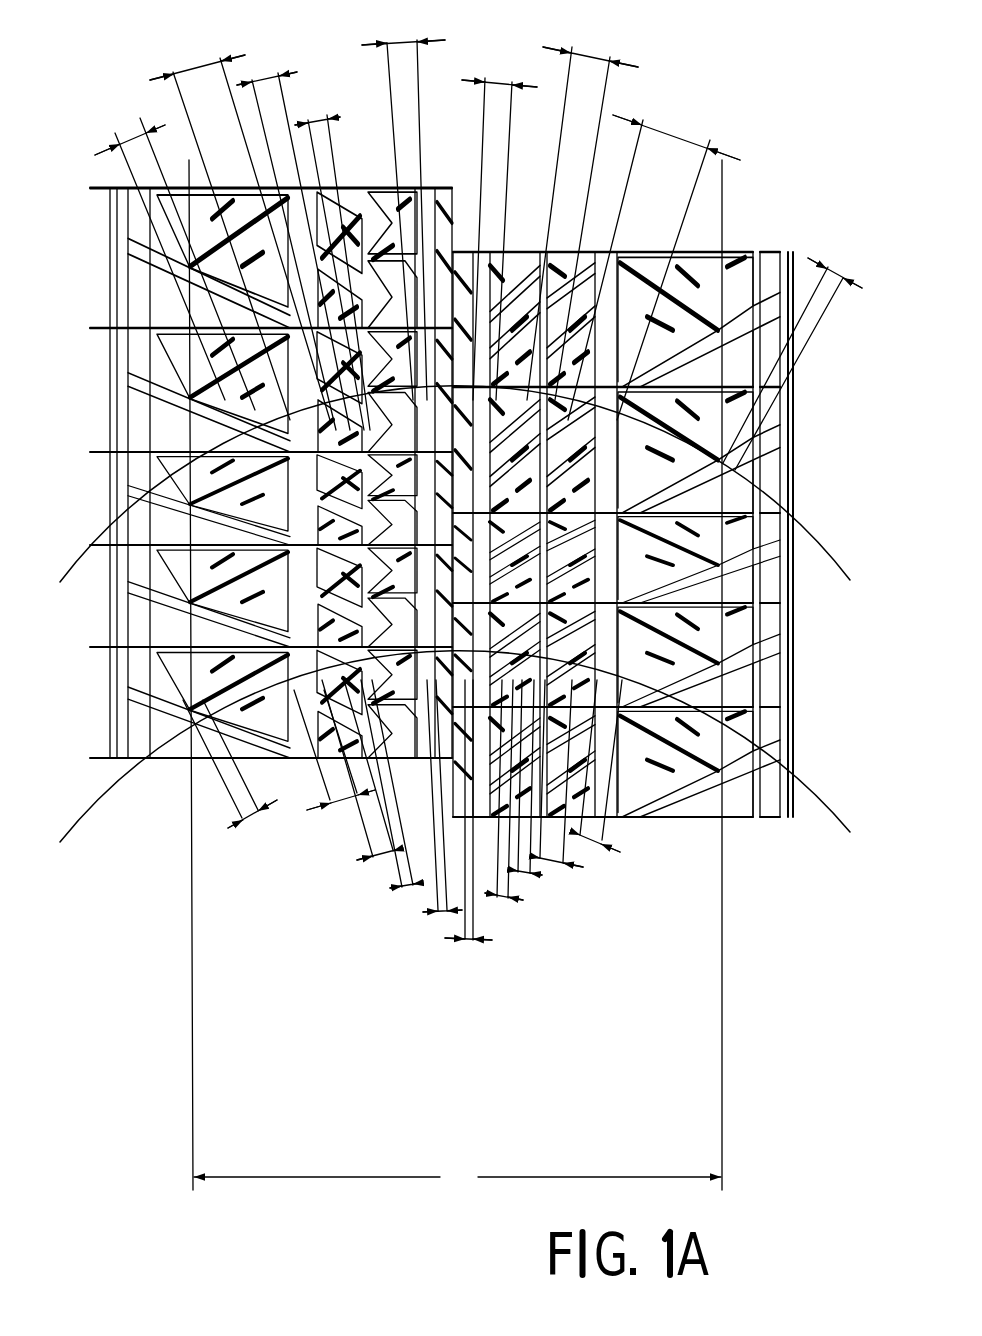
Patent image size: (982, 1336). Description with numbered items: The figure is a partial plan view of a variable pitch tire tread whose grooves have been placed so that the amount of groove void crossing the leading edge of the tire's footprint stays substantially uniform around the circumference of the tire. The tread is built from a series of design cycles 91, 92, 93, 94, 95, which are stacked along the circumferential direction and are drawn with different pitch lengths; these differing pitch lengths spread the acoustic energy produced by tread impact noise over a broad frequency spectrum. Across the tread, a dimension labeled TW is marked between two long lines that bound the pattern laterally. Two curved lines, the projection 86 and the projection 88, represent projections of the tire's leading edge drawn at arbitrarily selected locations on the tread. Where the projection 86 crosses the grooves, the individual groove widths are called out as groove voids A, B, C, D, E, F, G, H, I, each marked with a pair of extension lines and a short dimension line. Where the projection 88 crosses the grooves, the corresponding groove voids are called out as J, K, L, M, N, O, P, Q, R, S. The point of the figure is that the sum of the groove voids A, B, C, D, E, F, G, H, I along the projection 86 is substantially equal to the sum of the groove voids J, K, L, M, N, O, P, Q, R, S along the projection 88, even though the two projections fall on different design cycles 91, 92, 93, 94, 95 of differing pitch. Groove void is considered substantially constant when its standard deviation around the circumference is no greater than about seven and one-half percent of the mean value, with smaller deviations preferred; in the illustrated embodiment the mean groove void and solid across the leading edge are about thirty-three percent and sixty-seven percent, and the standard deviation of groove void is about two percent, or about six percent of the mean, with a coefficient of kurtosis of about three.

The groove void A is at (128, 133).
The groove void B is at (203, 62).
The groove void C is at (262, 78).
The groove void D is at (312, 115).
The groove void E is at (400, 42).
The groove void F is at (497, 80).
The groove void G is at (590, 50).
The groove void H is at (680, 133).
The groove void I is at (845, 270).
The groove void J is at (245, 820).
The groove void K is at (343, 800).
The groove void L is at (380, 855).
The groove void M is at (403, 886).
The groove void N is at (432, 912).
The groove void O is at (462, 940).
The groove void P is at (500, 897).
The groove void Q is at (525, 873).
The groove void R is at (555, 860).
The groove void S is at (590, 840).
The projection of the tire's leading edge 86 is at (840, 580).
The projection of the tire's leading edge 88 is at (845, 830).
The design cycle 91 is at (90, 188).
The design cycle 92 is at (90, 328).
The design cycle 93 is at (90, 452).
The design cycle 94 is at (70, 596).
The design cycle 95 is at (90, 647).
The tread width TW is at (455, 675).